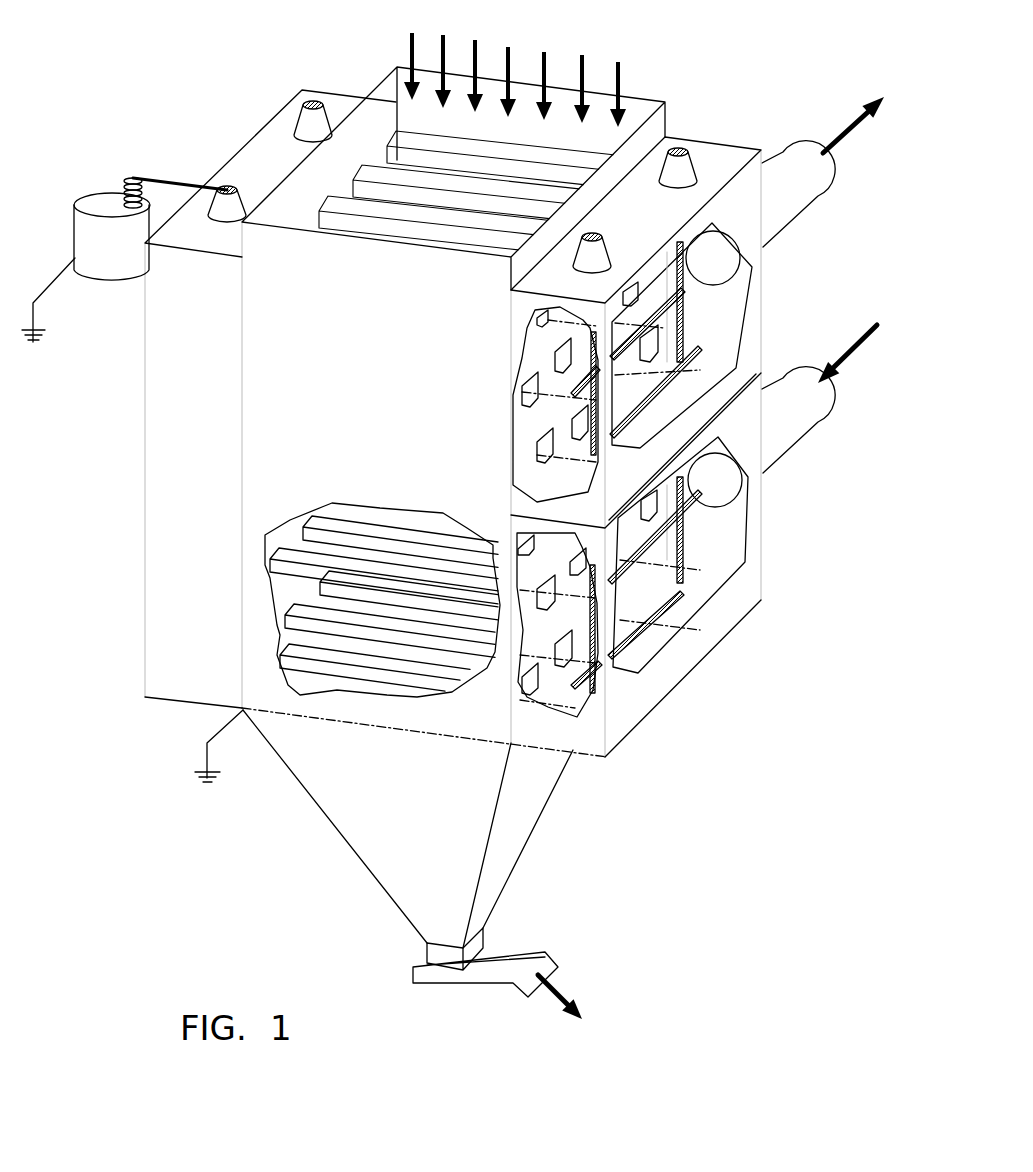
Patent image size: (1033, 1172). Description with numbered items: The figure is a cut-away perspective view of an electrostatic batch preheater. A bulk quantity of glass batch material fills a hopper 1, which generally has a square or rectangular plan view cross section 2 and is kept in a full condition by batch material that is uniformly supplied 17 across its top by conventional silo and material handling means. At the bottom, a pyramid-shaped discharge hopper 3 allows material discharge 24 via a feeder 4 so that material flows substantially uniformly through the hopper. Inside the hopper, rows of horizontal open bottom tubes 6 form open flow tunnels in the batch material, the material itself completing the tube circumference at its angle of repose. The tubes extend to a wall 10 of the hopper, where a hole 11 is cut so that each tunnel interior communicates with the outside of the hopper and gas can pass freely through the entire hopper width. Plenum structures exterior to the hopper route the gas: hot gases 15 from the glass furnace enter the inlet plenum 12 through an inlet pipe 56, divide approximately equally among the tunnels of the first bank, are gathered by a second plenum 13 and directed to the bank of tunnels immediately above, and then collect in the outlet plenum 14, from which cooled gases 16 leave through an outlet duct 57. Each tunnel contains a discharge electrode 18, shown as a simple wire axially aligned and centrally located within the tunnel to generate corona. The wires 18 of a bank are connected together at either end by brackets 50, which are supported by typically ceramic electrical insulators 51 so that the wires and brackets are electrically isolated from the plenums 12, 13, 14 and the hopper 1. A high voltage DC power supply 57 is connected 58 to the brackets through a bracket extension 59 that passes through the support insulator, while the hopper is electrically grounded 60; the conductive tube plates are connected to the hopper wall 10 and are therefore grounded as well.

The hopper 1 is at (320, 372).
The plan view cross section 2 is at (298, 208).
The discharge hopper 3 is at (377, 807).
The feeder 4 is at (457, 988).
The horizontal open bottom tubes 6 is at (352, 213).
The hopper wall 10 is at (540, 647).
The hole 11 is at (567, 657).
The inlet plenum 12 is at (654, 479).
The second plenum 13 is at (185, 465).
The outlet plenum 14 is at (664, 362).
The hot gases 15 is at (862, 341).
The cooled gases 16 is at (866, 116).
The batch material supply 17 is at (515, 68).
The discharge electrode 18 is at (660, 575).
The material discharge 24 is at (578, 1004).
The brackets 50 is at (683, 292).
The electrical insulators 51 is at (600, 257).
The inlet pipe 56 is at (792, 430).
The outlet duct / high voltage DC power supply 57 is at (785, 205).
The connection 58 is at (170, 180).
The bracket extension 59 is at (240, 218).
The electrical ground 60 is at (195, 772).